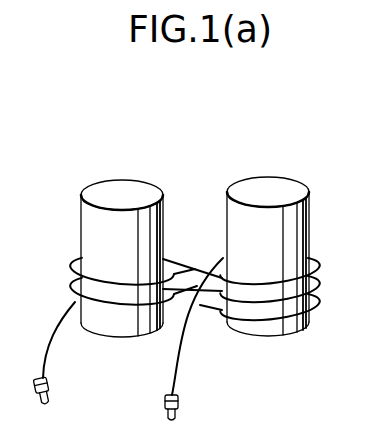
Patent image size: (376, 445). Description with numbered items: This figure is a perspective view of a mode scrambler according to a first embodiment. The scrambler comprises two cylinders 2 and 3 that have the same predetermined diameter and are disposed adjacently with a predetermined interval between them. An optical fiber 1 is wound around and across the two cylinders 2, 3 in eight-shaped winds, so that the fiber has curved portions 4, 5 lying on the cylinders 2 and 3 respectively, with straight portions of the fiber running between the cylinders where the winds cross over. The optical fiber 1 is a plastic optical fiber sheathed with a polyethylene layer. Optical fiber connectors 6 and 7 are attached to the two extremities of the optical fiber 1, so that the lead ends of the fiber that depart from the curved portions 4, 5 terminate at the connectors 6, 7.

The optical fiber 1 is at (181, 360).
The cylinder 2 is at (275, 187).
The cylinder 3 is at (120, 186).
The curved portion 4 is at (318, 262).
The curved portion 5 is at (70, 262).
The optical fiber connector 6 is at (180, 403).
The optical fiber connector 7 is at (52, 395).